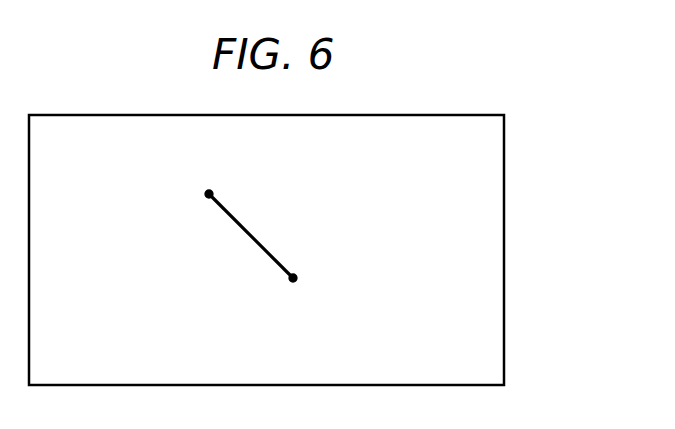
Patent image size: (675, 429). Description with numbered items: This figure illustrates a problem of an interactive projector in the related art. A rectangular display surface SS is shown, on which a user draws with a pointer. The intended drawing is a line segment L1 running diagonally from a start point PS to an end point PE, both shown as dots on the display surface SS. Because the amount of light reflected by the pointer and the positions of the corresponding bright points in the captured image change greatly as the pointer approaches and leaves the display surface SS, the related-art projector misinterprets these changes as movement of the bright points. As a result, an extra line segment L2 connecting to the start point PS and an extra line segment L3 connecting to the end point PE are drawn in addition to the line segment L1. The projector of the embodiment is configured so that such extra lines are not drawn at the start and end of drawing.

The display surface SS is at (505, 176).
The line segment L1 is at (243, 228).
The extra line segment L2 is at (211, 191).
The extra line segment L3 is at (295, 275).
The start point PS is at (206, 193).
The end point PE is at (291, 281).